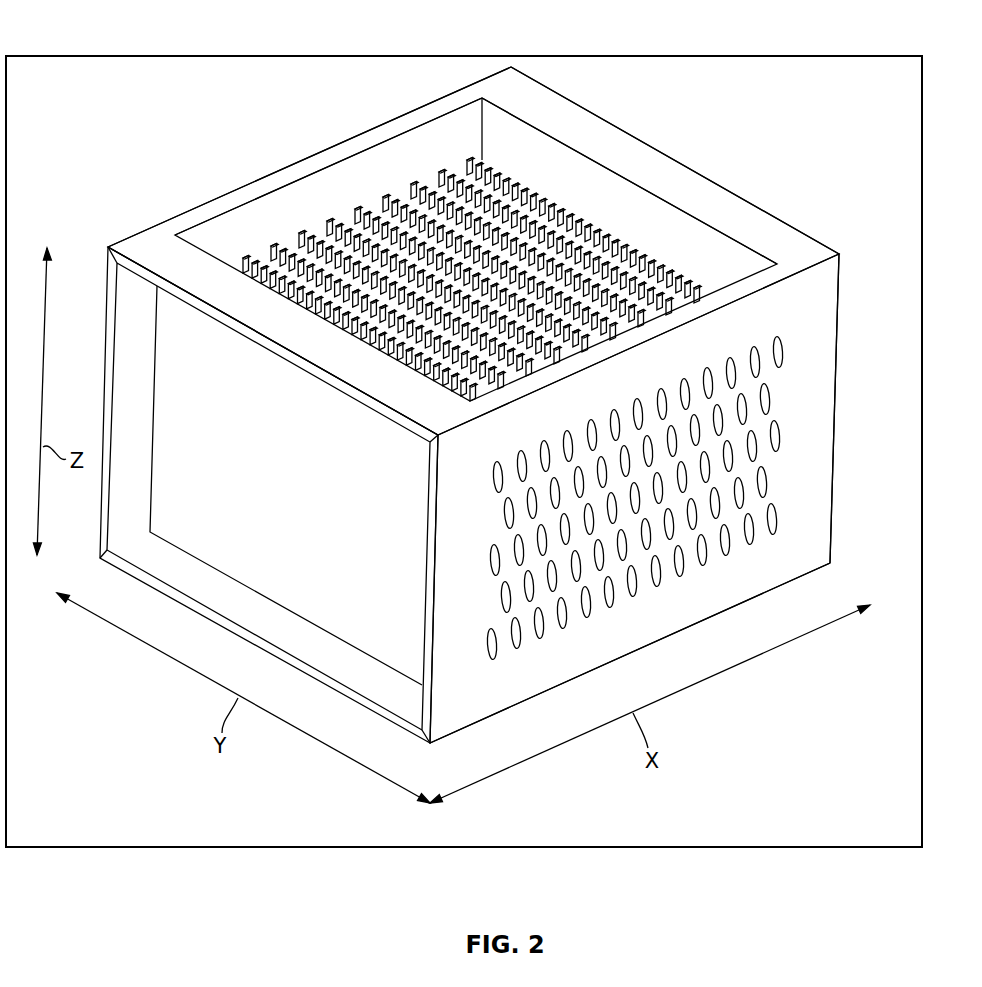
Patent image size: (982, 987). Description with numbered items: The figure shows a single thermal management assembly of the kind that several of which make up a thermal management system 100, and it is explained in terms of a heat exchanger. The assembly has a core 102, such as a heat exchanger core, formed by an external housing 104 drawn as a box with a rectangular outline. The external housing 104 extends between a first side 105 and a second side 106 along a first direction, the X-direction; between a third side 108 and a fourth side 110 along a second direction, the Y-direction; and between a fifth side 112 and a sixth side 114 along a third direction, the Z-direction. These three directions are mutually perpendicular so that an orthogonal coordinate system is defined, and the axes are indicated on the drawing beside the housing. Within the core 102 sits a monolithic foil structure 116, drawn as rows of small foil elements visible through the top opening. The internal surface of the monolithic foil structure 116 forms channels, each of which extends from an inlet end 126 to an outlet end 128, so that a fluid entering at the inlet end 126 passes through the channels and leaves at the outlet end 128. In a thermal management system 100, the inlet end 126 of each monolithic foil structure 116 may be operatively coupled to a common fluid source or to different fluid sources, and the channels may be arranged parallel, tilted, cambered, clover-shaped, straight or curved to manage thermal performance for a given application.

The thermal management system 100 is at (122, 88).
The core 102 is at (833, 497).
The external housing 104 is at (143, 238).
The first side 105 is at (162, 445).
The second side 106 is at (781, 214).
The third side 108 is at (820, 328).
The fourth side 110 is at (226, 197).
The fifth side 112 is at (457, 100).
The sixth side 114 is at (500, 713).
The monolithic foil structure 116 is at (568, 200).
The inlet end 126 is at (768, 400).
The outlet end 128 is at (290, 165).